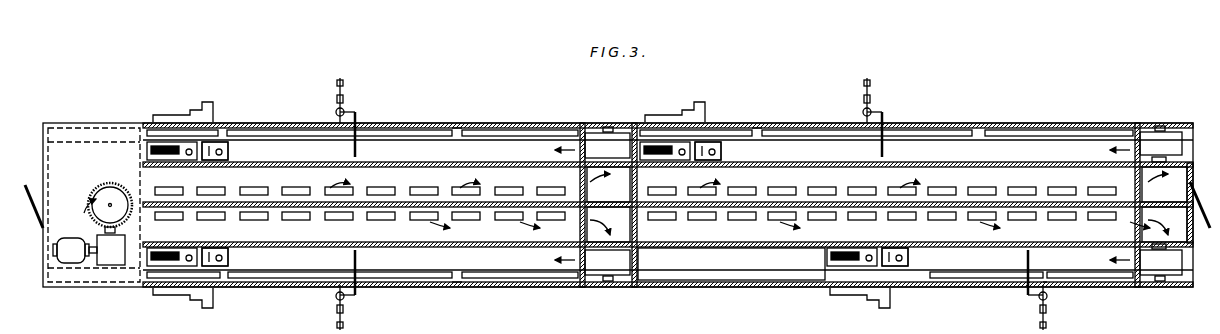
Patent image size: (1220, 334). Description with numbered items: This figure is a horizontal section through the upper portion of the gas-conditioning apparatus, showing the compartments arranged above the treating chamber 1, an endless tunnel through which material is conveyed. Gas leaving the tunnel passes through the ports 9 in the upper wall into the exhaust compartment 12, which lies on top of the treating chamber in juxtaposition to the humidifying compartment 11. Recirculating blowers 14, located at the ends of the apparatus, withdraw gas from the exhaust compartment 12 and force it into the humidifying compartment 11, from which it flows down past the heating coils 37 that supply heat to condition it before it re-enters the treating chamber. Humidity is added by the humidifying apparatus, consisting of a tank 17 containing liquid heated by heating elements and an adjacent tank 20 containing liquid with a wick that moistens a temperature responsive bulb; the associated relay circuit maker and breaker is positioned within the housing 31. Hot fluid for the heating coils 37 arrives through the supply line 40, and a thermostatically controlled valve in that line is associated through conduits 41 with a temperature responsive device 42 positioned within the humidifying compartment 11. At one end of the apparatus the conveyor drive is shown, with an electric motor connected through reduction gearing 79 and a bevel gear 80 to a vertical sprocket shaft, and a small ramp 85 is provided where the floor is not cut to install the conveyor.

The chamber 1 is at (59, 128).
The ports 9 is at (284, 186).
The humidifying compartment 11 is at (442, 131).
The exhaust compartment 12 is at (470, 151).
The recirculating blowers 14 is at (602, 123).
The tank 17 is at (183, 158).
The tank 20 is at (218, 158).
The housing 31 is at (212, 107).
The heating coils 37 is at (275, 129).
The hot fluid supply line 40 is at (343, 82).
The conduits 41 is at (356, 109).
The temperature responsive device 42 is at (356, 149).
The reduction gearing 79 is at (68, 237).
The bevel gear 80 is at (109, 183).
The ramp 85 is at (1192, 202).